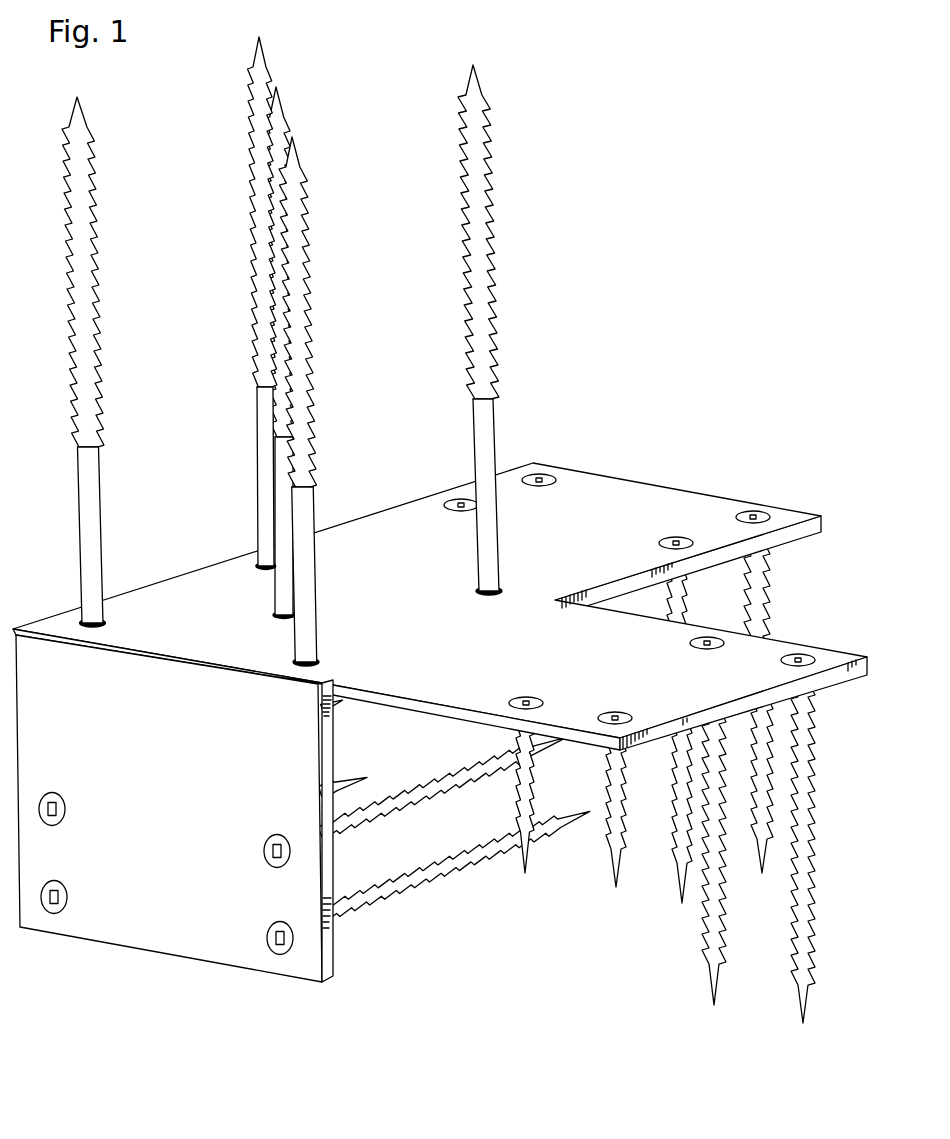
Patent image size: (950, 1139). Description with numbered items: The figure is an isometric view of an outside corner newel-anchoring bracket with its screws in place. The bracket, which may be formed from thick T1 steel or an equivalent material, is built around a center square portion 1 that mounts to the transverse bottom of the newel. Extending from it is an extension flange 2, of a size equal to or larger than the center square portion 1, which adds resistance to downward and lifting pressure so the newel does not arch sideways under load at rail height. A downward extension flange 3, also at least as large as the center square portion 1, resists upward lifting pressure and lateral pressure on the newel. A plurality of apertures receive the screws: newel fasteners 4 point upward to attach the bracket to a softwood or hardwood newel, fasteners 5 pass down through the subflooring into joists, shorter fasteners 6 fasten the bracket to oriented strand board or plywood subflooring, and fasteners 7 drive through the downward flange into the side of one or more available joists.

The center square portion 1 is at (440, 546).
The extension flange 2 is at (644, 497).
The downward extension flange 3 is at (123, 906).
The newel fastener 4 is at (323, 343).
The fastener 5 is at (800, 1005).
The fastener 6 is at (611, 881).
The fastener 7 is at (416, 893).